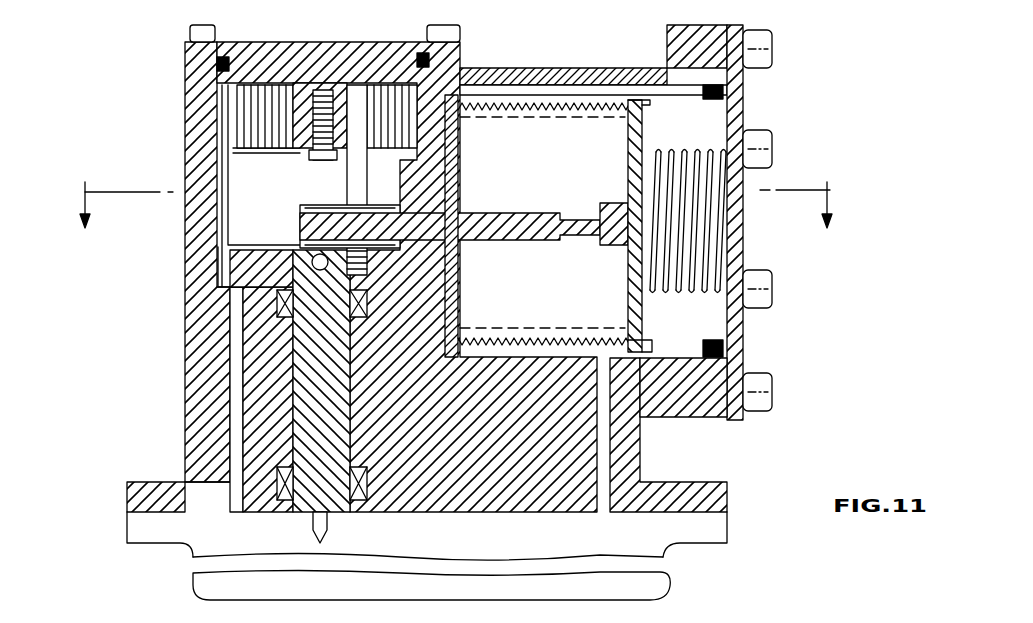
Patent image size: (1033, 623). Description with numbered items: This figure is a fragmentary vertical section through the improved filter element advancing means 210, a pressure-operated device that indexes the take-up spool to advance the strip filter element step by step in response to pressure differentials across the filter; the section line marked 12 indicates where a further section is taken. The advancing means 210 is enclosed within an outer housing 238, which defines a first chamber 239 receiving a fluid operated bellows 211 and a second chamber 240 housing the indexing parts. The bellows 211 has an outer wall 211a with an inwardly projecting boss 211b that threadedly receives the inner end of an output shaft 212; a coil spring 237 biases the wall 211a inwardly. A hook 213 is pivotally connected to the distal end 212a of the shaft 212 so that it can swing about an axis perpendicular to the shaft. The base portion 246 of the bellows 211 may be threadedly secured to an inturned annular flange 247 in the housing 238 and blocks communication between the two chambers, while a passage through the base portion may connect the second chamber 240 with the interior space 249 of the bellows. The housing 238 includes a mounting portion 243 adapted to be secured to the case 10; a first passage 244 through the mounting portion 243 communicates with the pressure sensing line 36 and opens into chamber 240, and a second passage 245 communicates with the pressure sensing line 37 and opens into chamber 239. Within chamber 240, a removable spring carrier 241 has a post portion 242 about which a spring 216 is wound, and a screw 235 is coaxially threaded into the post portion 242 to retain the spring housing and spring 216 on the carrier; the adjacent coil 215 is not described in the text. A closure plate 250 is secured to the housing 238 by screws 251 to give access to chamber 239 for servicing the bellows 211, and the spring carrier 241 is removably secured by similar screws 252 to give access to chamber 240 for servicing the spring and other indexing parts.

The case 10 is at (697, 532).
The section line 12- 12 is at (456, 207).
The pressure sensing line 36 is at (203, 560).
The pressure sensing line 37 is at (603, 513).
The filter element advancing means 210 is at (787, 58).
The bellows 211 is at (567, 100).
The outer wall 211a is at (735, 216).
The inwardly projecting boss 211b is at (617, 247).
The output shaft 212 is at (527, 235).
The distal end 212a is at (607, 203).
The hook 213 is at (453, 190).
The coil 215 is at (357, 120).
The spring 216 is at (262, 105).
The screw 235 is at (310, 160).
The coil spring 237 is at (727, 323).
The outer housing 238 is at (493, 68).
The first chamber 239 is at (700, 250).
The second chamber 240 is at (240, 184).
The spring carrier 241 is at (300, 63).
The post portion 242 is at (335, 100).
The mounting portion 243 is at (197, 405).
The first passage 244 is at (238, 372).
The second passage 245 is at (602, 423).
The base portion 246 is at (457, 157).
The inturned annular flange 247 is at (420, 273).
The interior space 249 is at (563, 310).
The closure plate 250 is at (740, 117).
The screws 251 is at (783, 392).
The screws 252 is at (190, 33).